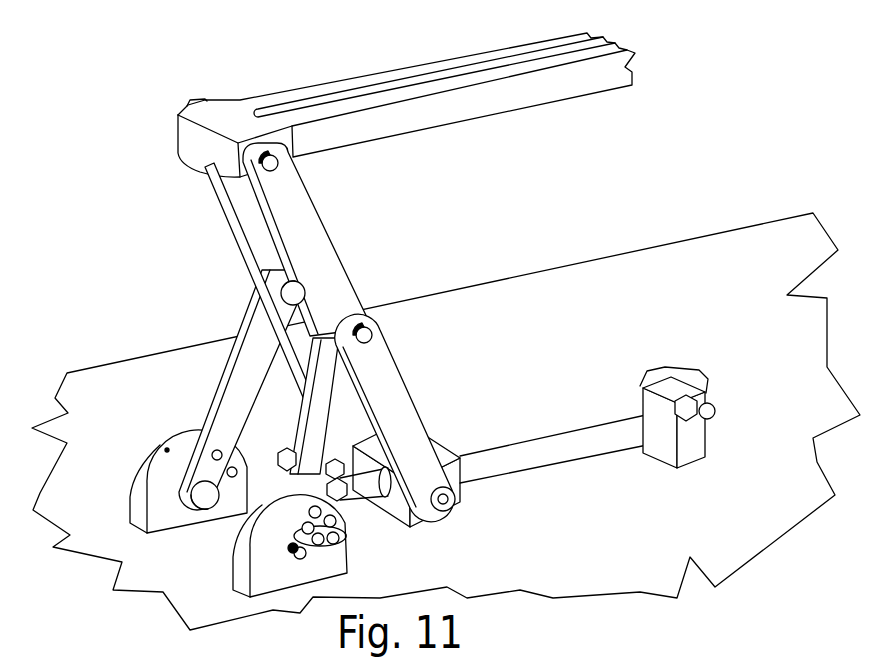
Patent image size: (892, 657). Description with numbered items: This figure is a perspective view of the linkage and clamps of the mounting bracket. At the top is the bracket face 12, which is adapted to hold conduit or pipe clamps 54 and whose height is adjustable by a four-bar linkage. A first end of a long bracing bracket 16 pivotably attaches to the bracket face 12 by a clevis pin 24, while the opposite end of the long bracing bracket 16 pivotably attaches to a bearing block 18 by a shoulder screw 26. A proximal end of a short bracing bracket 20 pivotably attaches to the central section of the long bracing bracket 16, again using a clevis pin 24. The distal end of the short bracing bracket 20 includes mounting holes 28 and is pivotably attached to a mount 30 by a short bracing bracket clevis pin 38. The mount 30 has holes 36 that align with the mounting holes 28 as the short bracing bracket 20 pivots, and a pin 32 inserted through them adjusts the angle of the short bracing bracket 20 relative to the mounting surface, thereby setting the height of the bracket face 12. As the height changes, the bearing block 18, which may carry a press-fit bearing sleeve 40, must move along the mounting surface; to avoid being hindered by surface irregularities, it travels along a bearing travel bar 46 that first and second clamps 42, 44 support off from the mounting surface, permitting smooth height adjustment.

The bracket face 12 is at (540, 106).
The conduit clamps or pipe clamps 54 is at (344, 95).
The long bracing bracket 16 is at (357, 262).
The bearing block 18 is at (437, 512).
The short bracing bracket 20 is at (242, 322).
The clevis pin 24 is at (280, 166).
The shoulder screw 26 is at (456, 505).
The mounting holes 28 is at (215, 451).
The mount 30 is at (133, 503).
The pin 32 is at (561, 357).
The holes 36 is at (235, 469).
The short bracing bracket clevis pin 38 is at (287, 557).
The bearing sleeve 40 is at (398, 462).
The first clamp 42 is at (289, 448).
The second clamp 44 is at (706, 452).
The bearing travel bar 46 is at (578, 457).